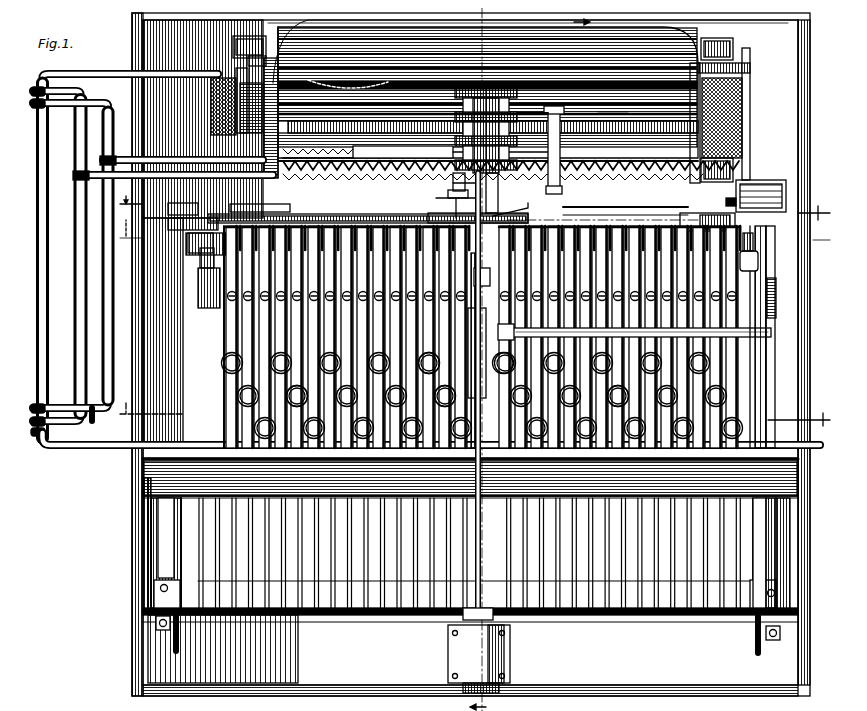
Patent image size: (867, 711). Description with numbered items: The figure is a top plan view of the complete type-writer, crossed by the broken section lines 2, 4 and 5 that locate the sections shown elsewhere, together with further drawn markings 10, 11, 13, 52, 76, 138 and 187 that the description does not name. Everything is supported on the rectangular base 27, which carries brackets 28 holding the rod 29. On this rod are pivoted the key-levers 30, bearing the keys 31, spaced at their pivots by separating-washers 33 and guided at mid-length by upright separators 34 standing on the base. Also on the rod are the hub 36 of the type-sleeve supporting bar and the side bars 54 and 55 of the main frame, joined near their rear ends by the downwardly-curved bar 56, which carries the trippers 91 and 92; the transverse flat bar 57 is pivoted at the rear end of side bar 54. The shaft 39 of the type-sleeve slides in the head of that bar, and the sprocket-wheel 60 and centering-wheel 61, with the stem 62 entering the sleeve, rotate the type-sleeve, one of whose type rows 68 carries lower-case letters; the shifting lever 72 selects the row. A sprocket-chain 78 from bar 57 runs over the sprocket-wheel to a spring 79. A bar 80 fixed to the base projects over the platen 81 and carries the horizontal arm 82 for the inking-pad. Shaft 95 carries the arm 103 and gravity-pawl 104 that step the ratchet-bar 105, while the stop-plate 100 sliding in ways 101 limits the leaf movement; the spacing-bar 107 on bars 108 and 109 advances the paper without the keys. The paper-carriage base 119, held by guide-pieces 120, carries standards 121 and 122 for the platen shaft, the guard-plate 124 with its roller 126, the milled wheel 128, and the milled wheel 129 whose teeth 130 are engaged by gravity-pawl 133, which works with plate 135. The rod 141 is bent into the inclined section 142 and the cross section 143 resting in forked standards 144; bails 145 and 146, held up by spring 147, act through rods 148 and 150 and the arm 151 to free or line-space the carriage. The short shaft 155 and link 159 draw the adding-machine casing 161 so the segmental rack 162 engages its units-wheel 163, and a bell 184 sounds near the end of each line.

The section line 2 2 is at (535, 363).
The section line 4 4 is at (475, 415).
The section line 5 5 is at (475, 209).
The rack bar 10 is at (440, 110).
The platen drum 11 is at (110, 40).
The section line 13 is at (475, 235).
The base 27 is at (471, 354).
The brackets 28 is at (148, 618).
The rod 29 is at (210, 607).
The key-levers 30 is at (240, 367).
The keys 31 is at (458, 396).
The separating-washers 33 is at (342, 608).
The upright separators 34 is at (735, 405).
The hub 36 is at (462, 612).
The shaft 39 is at (485, 305).
The stop plate 52 is at (195, 210).
The side bar 54 is at (165, 518).
The side bar 55 is at (758, 518).
The downwardly-curved bar 56 is at (210, 255).
The transverse flat bar 57 is at (178, 235).
The sprocket-wheel 60 is at (545, 210).
The centering-wheel 61 is at (515, 204).
The stem 62 is at (499, 193).
The row of type 68 is at (498, 80).
The shifting lever 72 is at (465, 384).
The key 76 is at (455, 345).
The sprocket-chain 78 is at (425, 208).
The spring 79 is at (416, 204).
The bar 80 is at (560, 172).
The platen 81 is at (613, 104).
The horizontal arm 82 is at (545, 98).
The tripper 91 is at (206, 300).
The tripper 92 is at (768, 298).
The shaft 95 is at (462, 190).
The stop-plate 100 is at (488, 690).
The ways 101 is at (502, 646).
The arm 103 is at (426, 187).
The gravity-pawl 104 is at (400, 118).
The ratchet-bar 105 is at (330, 206).
The spacing-bar 107 is at (470, 477).
The bar 108 is at (140, 558).
The bar 109 is at (782, 565).
The base of the paper-carriage 119 is at (742, 55).
The guide-pieces 120 is at (720, 30).
The standard 121 is at (535, 46).
The standard 122 is at (686, 55).
The guard-plate 124 is at (478, 78).
The roller 126 is at (375, 125).
The milled wheel 128 is at (736, 112).
The milled wheel 129 is at (215, 103).
The teeth 130 is at (228, 38).
The gravity-pawl 133 is at (203, 90).
The plate 135 is at (300, 206).
The drum surface 138 is at (346, 68).
The rod 141 is at (60, 70).
The inclined rod-section 142 is at (57, 256).
The rod-section 143 is at (96, 445).
The forked standards 144 is at (205, 455).
The bail 145 is at (78, 295).
The bail 146 is at (103, 363).
The spring 147 is at (58, 403).
The rod 148 is at (148, 155).
The rod 150 is at (188, 197).
The arm 151 is at (375, 278).
The short shaft 155 is at (740, 334).
The link 159 is at (772, 260).
The casing 161 is at (761, 186).
The segmental rack 162 is at (680, 205).
The wheel 163 is at (728, 194).
The bell 184 is at (528, 18).
The cross bar 187 is at (478, 474).